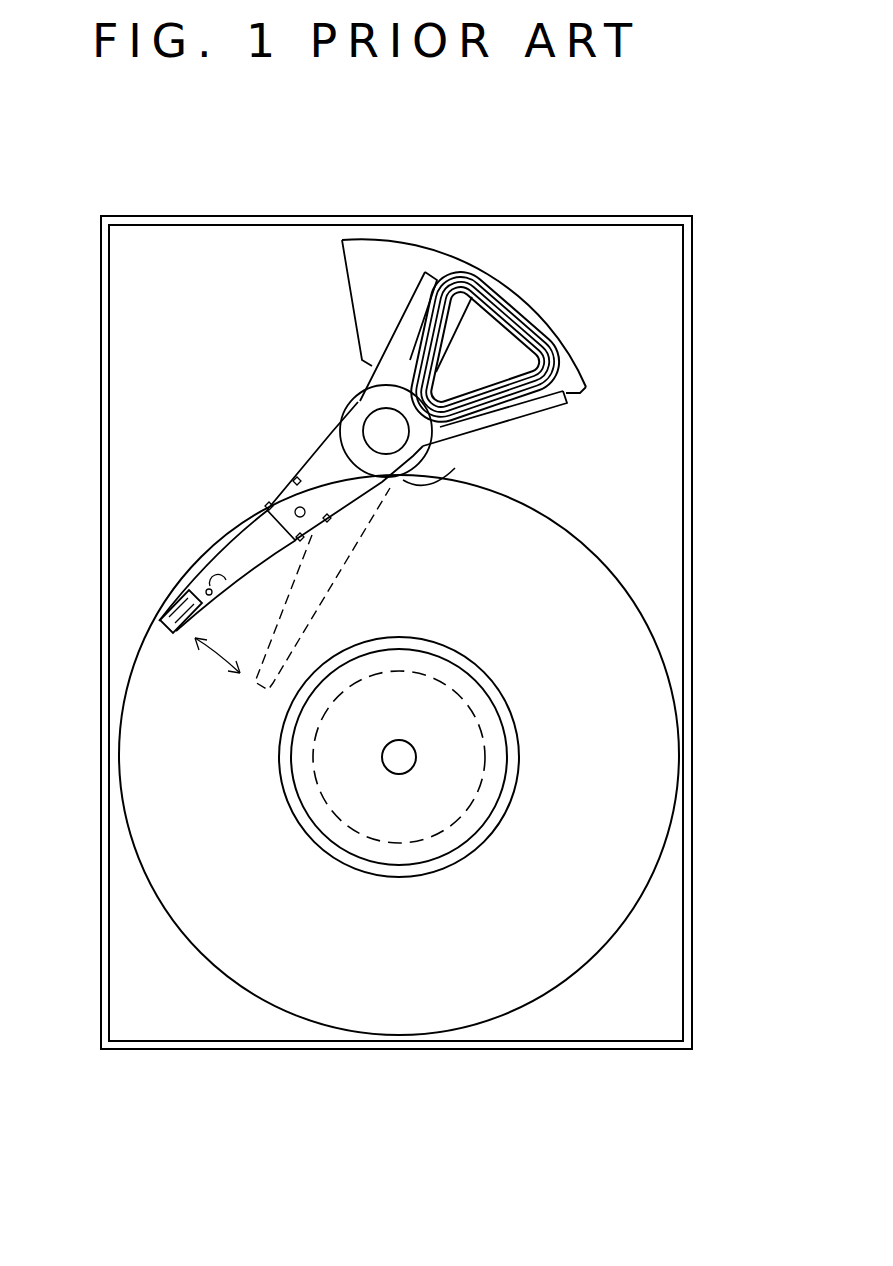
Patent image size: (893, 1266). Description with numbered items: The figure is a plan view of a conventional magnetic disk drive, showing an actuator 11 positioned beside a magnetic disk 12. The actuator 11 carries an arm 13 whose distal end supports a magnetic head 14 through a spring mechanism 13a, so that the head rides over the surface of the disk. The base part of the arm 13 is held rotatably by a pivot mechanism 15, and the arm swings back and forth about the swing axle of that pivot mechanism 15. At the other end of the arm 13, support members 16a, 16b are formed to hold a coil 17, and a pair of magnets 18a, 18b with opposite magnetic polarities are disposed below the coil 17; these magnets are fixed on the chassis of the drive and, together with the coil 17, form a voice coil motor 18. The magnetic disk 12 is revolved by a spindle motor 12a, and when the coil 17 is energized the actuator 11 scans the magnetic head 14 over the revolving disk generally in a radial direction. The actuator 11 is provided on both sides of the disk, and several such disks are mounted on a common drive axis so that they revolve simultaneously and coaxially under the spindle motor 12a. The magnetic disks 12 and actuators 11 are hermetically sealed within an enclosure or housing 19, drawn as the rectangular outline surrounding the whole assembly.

The actuator 11 is at (280, 393).
The magnetic disk 12 is at (625, 590).
The spindle motor 12a is at (478, 727).
The arm 13 is at (313, 484).
The spring mechanism 13a is at (263, 537).
The magnetic head 14 is at (160, 622).
The pivot mechanism 15 is at (376, 436).
The support member 16a is at (406, 347).
The support member 16b is at (528, 410).
The coil 17 is at (522, 280).
The voice coil motor 18 is at (567, 305).
The magnet 18a is at (357, 270).
The magnet 18b is at (574, 377).
The enclosure or housing 19 is at (692, 858).